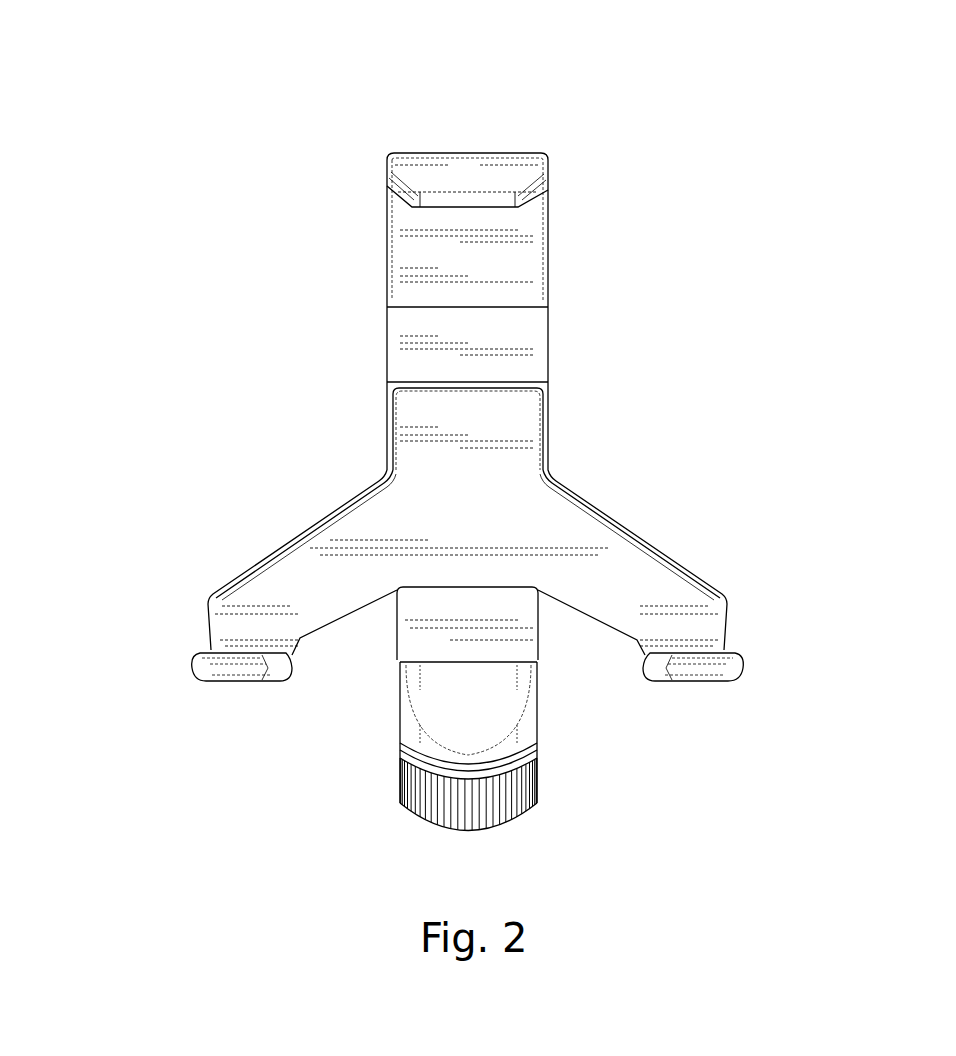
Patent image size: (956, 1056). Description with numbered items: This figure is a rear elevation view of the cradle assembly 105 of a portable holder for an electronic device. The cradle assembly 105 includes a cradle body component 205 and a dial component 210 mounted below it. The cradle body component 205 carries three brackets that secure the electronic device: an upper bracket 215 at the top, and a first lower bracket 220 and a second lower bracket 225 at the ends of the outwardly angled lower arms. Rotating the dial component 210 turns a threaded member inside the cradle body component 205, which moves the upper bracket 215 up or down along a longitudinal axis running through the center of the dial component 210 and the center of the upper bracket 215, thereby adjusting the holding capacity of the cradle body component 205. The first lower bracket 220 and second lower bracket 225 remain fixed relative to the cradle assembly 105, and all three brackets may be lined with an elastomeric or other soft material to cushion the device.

The cradle assembly 105 is at (246, 90).
The cradle body component 205 is at (540, 701).
The dial component 210 is at (398, 781).
The upper bracket 215 is at (484, 200).
The first lower bracket 220 is at (238, 667).
The second lower bracket 225 is at (712, 665).